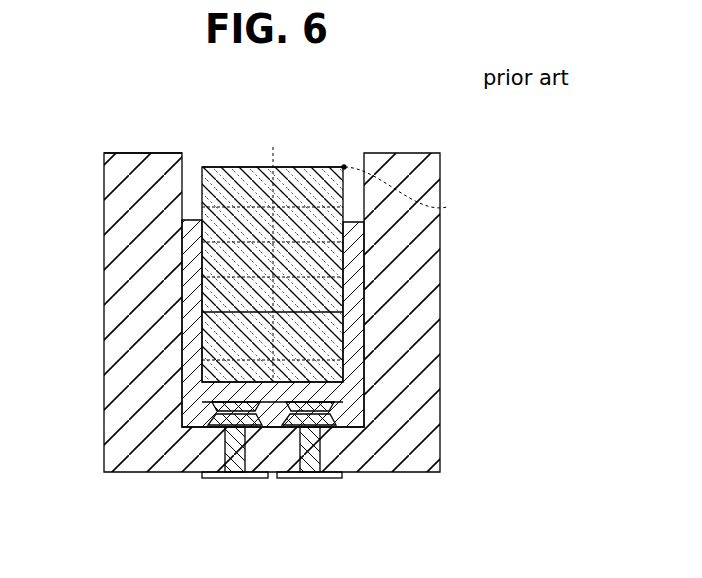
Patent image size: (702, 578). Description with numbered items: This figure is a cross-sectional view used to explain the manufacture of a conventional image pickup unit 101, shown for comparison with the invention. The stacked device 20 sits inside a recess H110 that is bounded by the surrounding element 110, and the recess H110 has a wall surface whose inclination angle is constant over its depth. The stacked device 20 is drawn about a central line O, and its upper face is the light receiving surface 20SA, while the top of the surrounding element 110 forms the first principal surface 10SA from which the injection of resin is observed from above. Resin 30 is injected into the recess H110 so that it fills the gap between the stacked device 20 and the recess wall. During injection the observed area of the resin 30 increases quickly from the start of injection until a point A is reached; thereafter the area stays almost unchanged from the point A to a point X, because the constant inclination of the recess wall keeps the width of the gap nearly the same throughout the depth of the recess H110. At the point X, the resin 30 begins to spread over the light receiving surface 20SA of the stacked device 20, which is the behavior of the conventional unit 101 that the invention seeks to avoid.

The conventional image pickup unit 101 is at (493, 182).
The housing / frame body 110 is at (416, 153).
The first principal surface 10SA is at (122, 147).
The point X is at (409, 191).
The resin 30 is at (329, 275).
The point A is at (347, 403).
The stacked device 20 is at (294, 235).
The center line O is at (275, 254).
The light receiving surface 20SA is at (244, 158).
The recess H110 is at (345, 160).